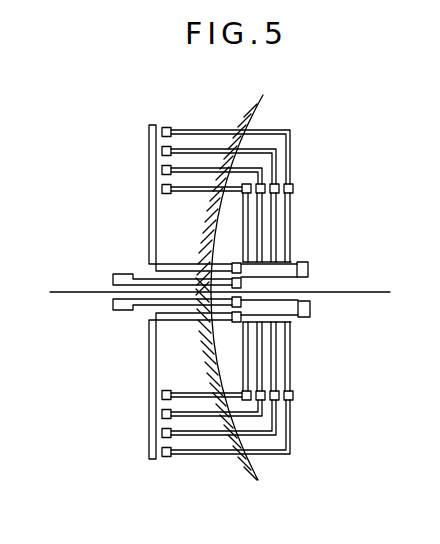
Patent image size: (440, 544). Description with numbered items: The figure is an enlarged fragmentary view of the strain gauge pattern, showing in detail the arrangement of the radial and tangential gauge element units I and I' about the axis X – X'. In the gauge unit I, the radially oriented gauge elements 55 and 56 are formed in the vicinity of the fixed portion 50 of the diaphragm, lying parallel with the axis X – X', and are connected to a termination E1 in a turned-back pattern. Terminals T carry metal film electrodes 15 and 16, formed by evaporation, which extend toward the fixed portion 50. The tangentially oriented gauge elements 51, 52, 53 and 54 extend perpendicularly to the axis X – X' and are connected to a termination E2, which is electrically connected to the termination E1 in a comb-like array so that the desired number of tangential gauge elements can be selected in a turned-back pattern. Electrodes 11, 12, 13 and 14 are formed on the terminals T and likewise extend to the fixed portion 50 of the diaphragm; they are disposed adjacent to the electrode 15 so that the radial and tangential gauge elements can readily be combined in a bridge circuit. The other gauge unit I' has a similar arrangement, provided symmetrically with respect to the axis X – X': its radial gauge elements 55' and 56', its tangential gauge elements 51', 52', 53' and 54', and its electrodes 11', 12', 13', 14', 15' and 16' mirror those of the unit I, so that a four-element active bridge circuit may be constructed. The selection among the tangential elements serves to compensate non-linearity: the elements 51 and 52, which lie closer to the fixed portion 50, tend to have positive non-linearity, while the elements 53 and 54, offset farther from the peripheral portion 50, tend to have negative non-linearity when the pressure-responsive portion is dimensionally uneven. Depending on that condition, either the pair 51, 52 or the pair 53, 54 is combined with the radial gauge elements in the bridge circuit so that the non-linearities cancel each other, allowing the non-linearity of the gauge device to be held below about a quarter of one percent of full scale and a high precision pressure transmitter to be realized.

The electrode 11 is at (179, 192).
The electrode 12 is at (186, 172).
The electrode 13 is at (193, 159).
The electrode 14 is at (227, 142).
The metal film electrode 15 is at (180, 181).
The metal film electrode 16 is at (155, 268).
The electrode 11' is at (184, 386).
The electrode 12' is at (191, 409).
The electrode 13' is at (198, 419).
The electrode 14' is at (227, 441).
The metal film electrode 15' is at (179, 398).
The metal film electrode 16' is at (155, 313).
The fixed portion of the diaphragm 50 is at (248, 461).
The tangential gauge element 51 is at (204, 227).
The tangential gauge element 52 is at (211, 227).
The tangential gauge element 53 is at (303, 226).
The tangential gauge element 54 is at (311, 227).
The radial gauge element 55 is at (333, 284).
The radial gauge element 56 is at (339, 314).
The tangential gauge element 51' is at (204, 355).
The tangential gauge element 52' is at (211, 356).
The tangential gauge element 53' is at (298, 356).
The tangential gauge element 54' is at (309, 366).
The radial gauge element 55' is at (339, 338).
The radial gauge element 56' is at (294, 313).
The terminal T is at (290, 188).
The termination E1 is at (309, 271).
The termination E2 is at (296, 265).
The gauge element unit I is at (350, 199).
The gauge element unit I' is at (328, 363).
The axis X is at (205, 293).
The axis X' is at (410, 293).